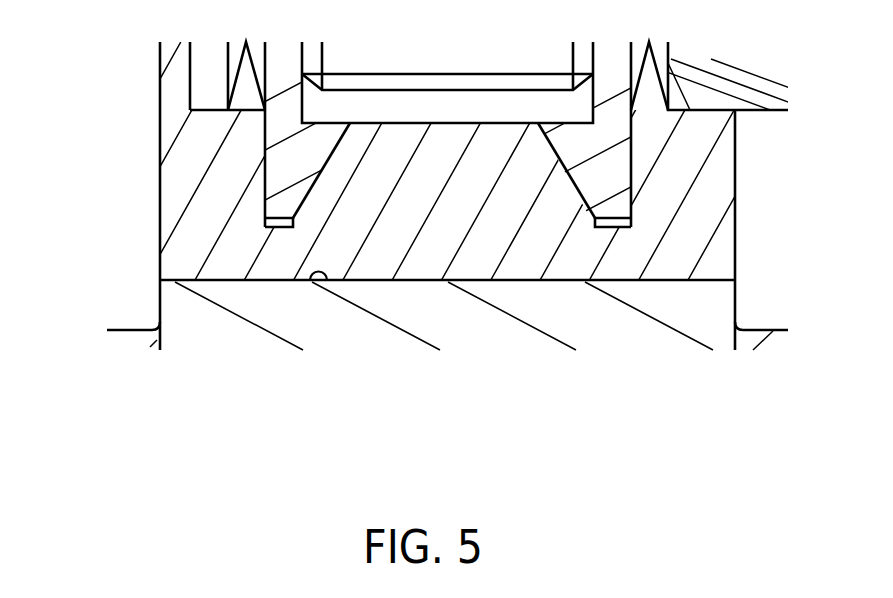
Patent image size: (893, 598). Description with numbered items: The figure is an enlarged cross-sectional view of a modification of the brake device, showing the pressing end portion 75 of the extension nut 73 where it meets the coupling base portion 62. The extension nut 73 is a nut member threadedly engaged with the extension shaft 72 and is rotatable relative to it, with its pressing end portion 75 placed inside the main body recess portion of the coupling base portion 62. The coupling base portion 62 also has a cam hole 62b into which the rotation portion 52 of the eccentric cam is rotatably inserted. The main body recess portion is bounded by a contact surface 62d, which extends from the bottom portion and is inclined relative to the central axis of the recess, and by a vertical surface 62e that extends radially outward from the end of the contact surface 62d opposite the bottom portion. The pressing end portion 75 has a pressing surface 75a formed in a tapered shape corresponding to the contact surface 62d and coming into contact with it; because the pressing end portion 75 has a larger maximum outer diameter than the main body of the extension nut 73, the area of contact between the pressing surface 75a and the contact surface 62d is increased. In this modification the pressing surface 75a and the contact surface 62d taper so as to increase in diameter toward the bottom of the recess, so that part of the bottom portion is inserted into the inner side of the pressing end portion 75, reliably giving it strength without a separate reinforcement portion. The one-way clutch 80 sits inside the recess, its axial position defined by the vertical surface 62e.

The rotation portion 52 is at (488, 240).
The coupling base portion 62 is at (737, 248).
The cam hole 62b is at (326, 283).
The contact surface 62d is at (568, 182).
The vertical surface 62e is at (210, 110).
The extension shaft 72 is at (538, 56).
The extension nut 73 is at (632, 133).
The pressing end portion 75 is at (283, 163).
The pressing surface 75a is at (293, 222).
The one-way clutch 80 is at (226, 78).